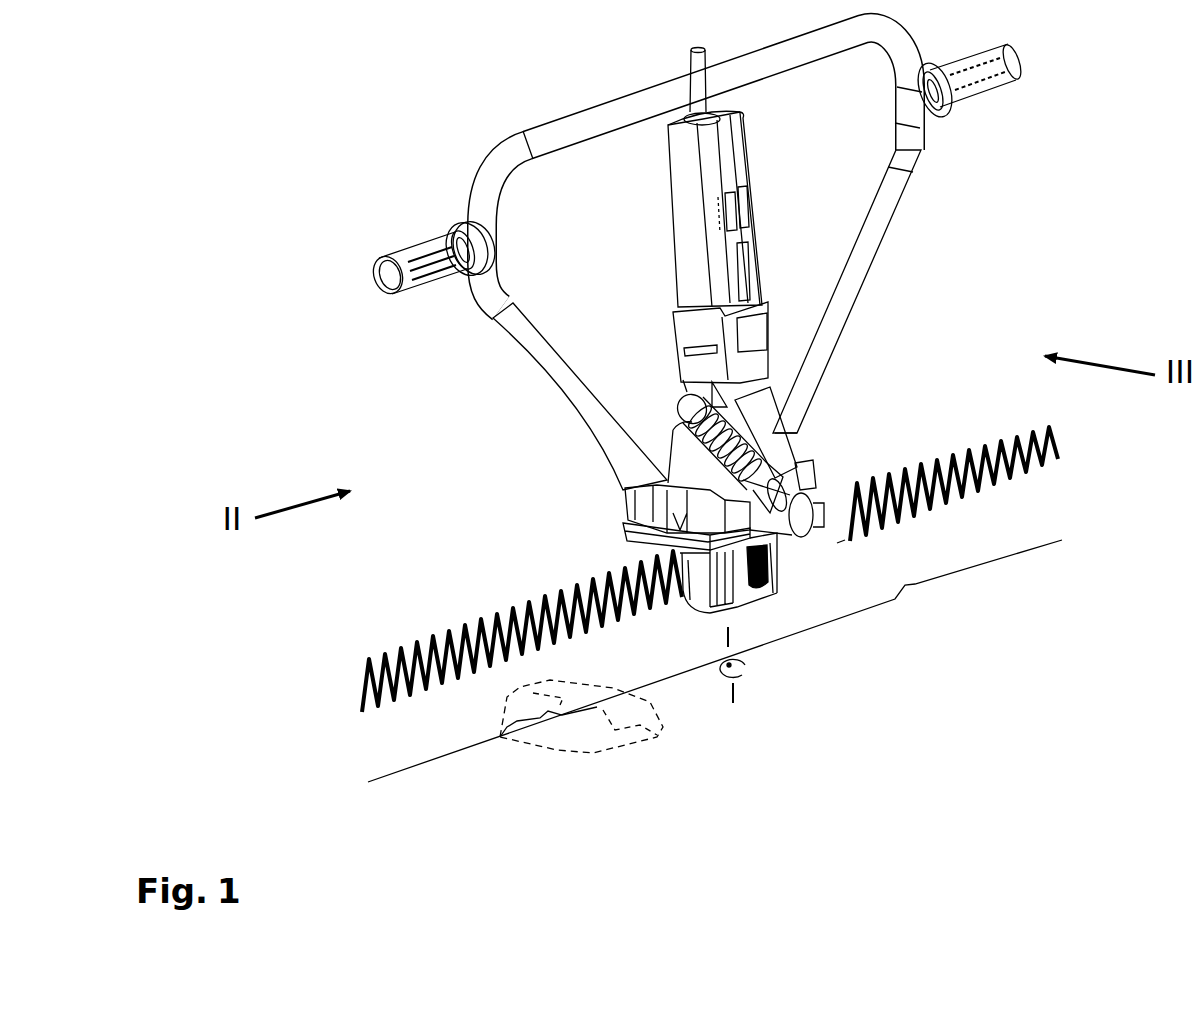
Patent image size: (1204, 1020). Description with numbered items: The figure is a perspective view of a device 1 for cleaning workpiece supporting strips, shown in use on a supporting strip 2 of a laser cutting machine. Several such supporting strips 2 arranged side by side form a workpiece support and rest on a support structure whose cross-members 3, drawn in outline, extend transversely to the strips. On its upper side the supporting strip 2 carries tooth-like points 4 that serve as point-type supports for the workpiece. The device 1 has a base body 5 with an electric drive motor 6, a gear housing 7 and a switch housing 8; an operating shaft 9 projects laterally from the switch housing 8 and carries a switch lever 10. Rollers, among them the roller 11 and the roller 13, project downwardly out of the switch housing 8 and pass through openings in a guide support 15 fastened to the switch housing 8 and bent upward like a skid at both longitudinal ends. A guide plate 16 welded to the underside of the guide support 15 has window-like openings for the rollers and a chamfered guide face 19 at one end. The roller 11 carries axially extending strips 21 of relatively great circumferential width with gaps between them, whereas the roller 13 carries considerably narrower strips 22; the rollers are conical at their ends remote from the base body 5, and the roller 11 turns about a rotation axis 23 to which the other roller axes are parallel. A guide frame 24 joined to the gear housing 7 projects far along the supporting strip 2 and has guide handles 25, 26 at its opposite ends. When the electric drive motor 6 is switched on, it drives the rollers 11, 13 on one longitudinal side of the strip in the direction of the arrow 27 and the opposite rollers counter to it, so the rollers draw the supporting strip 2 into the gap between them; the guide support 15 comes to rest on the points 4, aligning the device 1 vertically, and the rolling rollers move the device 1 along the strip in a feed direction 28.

The device 1 is at (495, 107).
The supporting strip 2 is at (1052, 535).
The cross-members 3 is at (557, 740).
The tooth-like points 4 is at (1058, 440).
The base body 5 is at (820, 405).
The electric drive motor 6 is at (750, 247).
The gear housing 7 is at (770, 440).
The switch housing 8 is at (617, 490).
The operating shaft 9 is at (837, 543).
The switch lever 10 is at (680, 400).
The roller 11 is at (735, 607).
The roller 13 is at (767, 565).
The guide support 15 is at (625, 536).
The guide plate 16 is at (700, 600).
The chamfered guide face 19 is at (712, 607).
The strips 21 is at (773, 593).
The strips 22 is at (773, 580).
The rotation axis 23 is at (733, 690).
The guide frame 24 is at (870, 248).
The guide handle 25 is at (990, 87).
The guide handle 26 is at (400, 248).
The arrow 27 is at (743, 673).
The feed direction 28 is at (305, 737).